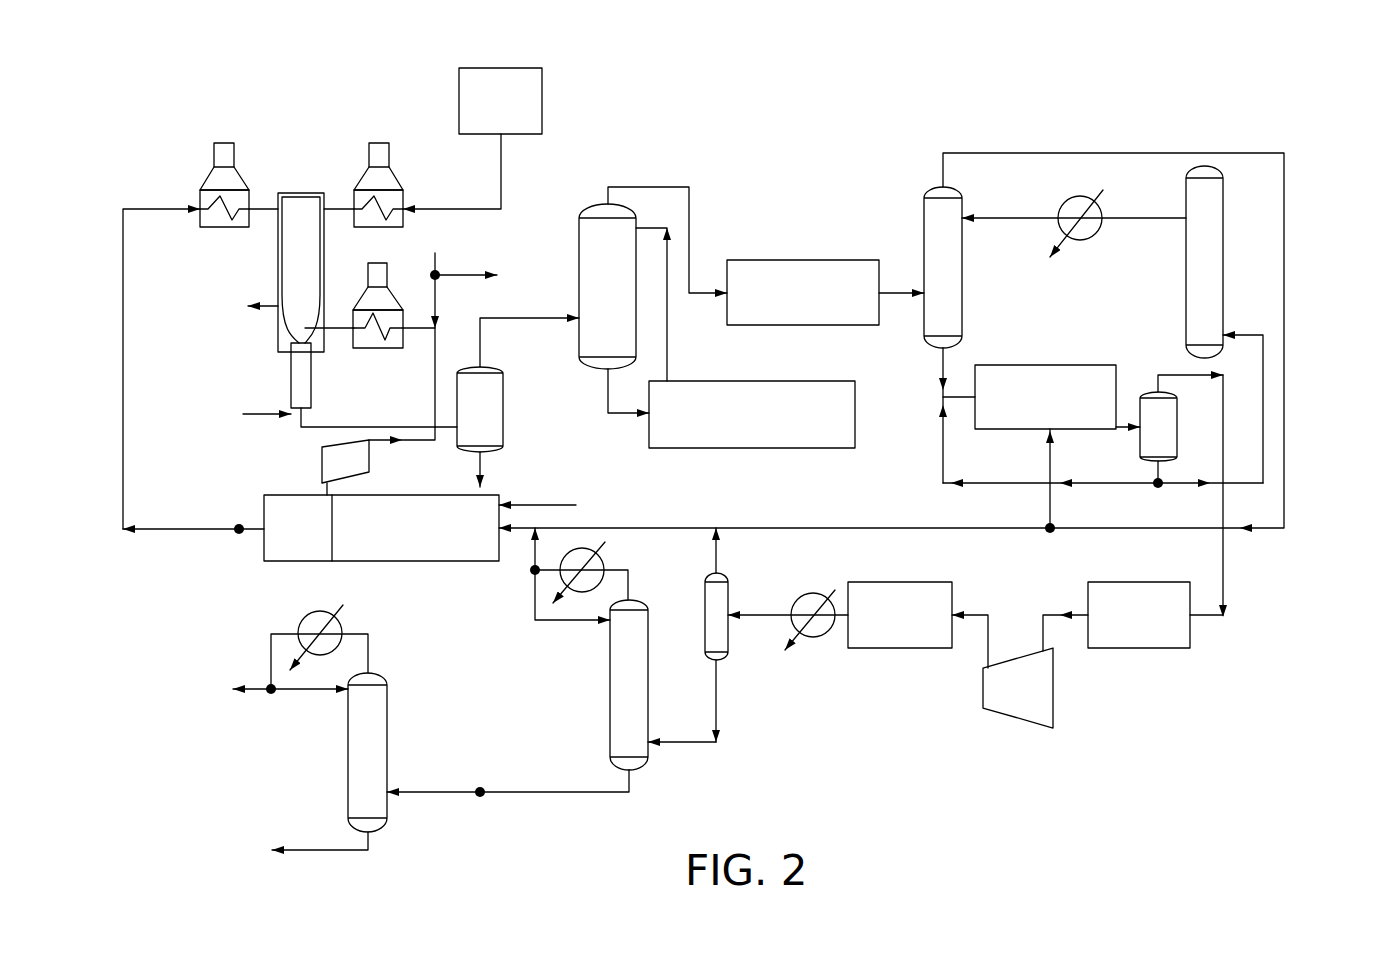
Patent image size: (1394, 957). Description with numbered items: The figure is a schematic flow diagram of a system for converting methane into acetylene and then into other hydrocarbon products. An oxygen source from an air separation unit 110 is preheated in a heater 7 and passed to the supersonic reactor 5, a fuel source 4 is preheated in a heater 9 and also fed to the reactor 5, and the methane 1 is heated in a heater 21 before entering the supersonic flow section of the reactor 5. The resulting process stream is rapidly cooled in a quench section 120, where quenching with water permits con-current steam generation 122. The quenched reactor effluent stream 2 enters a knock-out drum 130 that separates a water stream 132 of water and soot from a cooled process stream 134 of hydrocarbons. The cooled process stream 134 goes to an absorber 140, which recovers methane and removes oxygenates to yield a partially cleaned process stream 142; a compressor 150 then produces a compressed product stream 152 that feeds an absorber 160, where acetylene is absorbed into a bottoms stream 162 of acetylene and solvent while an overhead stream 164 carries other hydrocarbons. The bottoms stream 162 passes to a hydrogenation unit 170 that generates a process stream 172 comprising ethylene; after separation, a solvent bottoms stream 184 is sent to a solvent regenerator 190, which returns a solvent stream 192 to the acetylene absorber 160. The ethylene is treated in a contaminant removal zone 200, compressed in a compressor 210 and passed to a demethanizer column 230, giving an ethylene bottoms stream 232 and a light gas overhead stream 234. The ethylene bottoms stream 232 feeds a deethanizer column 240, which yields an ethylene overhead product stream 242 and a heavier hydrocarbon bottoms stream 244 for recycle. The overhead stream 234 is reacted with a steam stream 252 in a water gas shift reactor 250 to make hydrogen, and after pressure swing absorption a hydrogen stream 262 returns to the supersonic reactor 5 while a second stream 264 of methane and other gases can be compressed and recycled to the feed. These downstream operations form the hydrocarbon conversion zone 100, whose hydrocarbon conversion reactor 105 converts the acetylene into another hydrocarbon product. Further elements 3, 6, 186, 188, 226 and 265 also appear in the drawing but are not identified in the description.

The methane 1 is at (437, 295).
The reactor effluent stream 2 is at (337, 425).
The product stream 3 is at (258, 692).
The fuel source 4 is at (265, 203).
The supersonic reactor 5 is at (311, 193).
The fuel gas line 6 is at (501, 184).
The heater 7 is at (379, 143).
The heater 9 is at (224, 143).
The heater 21 is at (368, 272).
The hydrocarbon conversion zone 100 is at (1286, 150).
The hydrocarbon conversion reactor 105 is at (1086, 320).
The air separation unit 110 is at (527, 68).
The quench section 120 is at (291, 378).
The con-current steam generation 122 is at (273, 308).
The knock-out drum 130 is at (504, 387).
The water stream 132 is at (477, 470).
The cooled process stream 134 is at (542, 317).
The absorber 140 is at (579, 349).
The partially cleaned process stream 142 is at (649, 187).
The compressor 150 is at (800, 260).
The compressed product stream 152 is at (892, 292).
The absorber 160 is at (935, 187).
The bottoms stream 162 is at (943, 368).
The overhead stream 164 is at (1114, 153).
The hydrogenation unit 170 is at (997, 365).
The process stream 172 is at (1123, 425).
The bottoms stream 184 is at (1155, 471).
The vapor stream 186 is at (1243, 377).
The separator drum 188 is at (1177, 430).
The solvent regenerator 190 is at (1186, 240).
The solvent stream 192 is at (1135, 218).
The contaminant removal zone 200 is at (1155, 582).
The compressor 210 is at (1012, 718).
The processing unit 226 is at (940, 582).
The demethanizer column 230 is at (610, 676).
The ethylene bottoms stream 232 is at (562, 795).
The light gas overhead stream 234 is at (630, 580).
The deethanizer column 240 is at (387, 725).
The ethylene overhead product stream 242 is at (368, 652).
The heavier hydrocarbon bottoms stream 244 is at (327, 852).
The water gas shift reactor 250 is at (428, 562).
The steam stream 252 is at (548, 503).
The hydrogen stream 262 is at (168, 527).
The second stream 264 is at (324, 490).
The separation unit section 265 is at (303, 562).